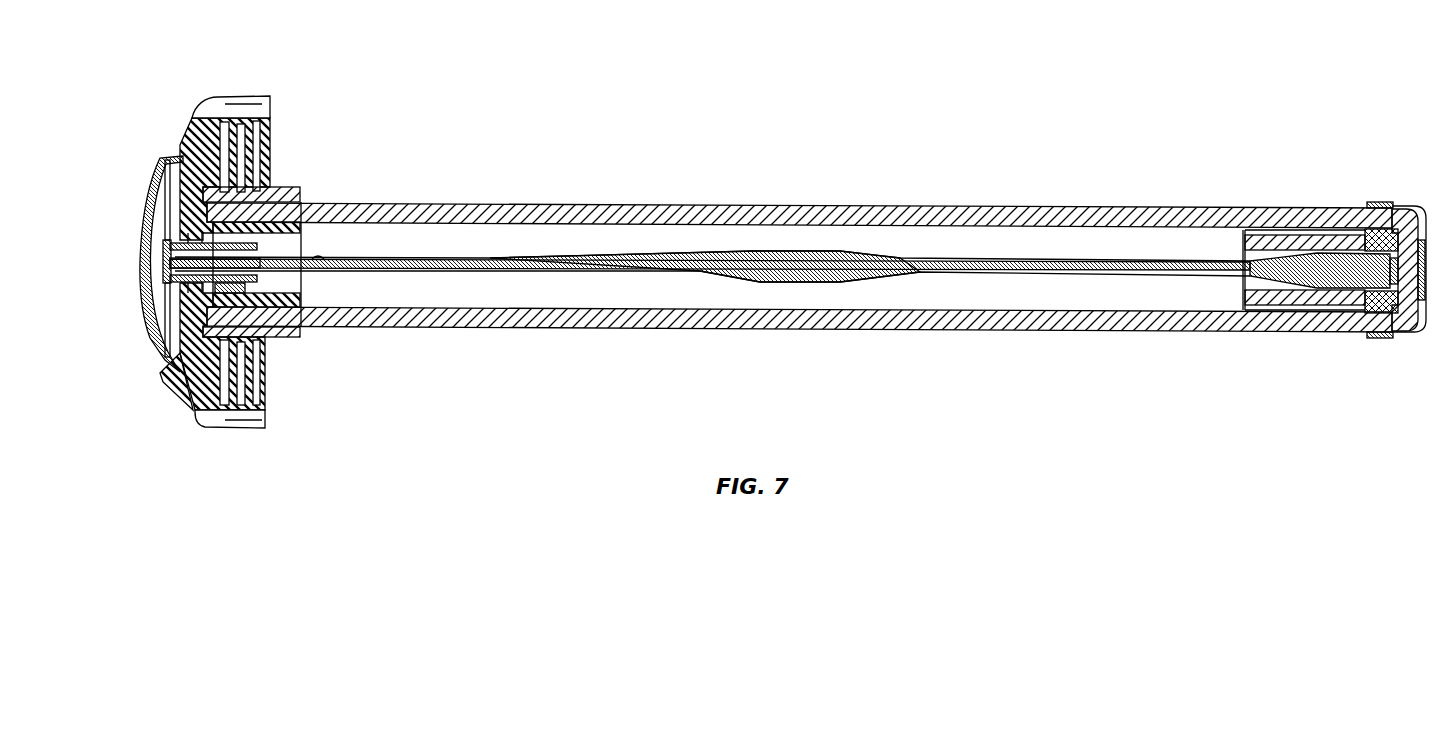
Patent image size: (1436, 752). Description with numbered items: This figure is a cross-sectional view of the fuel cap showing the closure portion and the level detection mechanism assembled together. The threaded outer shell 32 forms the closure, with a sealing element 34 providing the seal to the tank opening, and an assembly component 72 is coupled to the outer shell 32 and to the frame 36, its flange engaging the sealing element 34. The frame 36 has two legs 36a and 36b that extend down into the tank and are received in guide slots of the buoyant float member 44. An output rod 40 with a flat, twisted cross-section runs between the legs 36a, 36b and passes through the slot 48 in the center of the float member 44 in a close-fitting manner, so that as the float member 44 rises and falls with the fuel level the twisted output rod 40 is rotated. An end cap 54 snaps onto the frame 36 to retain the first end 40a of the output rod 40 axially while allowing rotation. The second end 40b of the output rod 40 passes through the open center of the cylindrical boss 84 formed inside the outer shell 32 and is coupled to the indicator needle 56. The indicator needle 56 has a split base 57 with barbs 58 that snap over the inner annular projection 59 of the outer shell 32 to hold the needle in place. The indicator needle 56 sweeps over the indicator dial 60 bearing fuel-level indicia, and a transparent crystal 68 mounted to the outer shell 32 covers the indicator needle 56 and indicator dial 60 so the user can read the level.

The outer shell 32 is at (270, 403).
The sealing element 34 is at (193, 133).
The frame 36 is at (1412, 322).
The frame leg 36a is at (572, 325).
The frame leg 36b is at (618, 205).
The output rod 40 is at (795, 262).
The first end 40a is at (1347, 270).
The second end 40b is at (183, 235).
The float member 44 is at (1263, 308).
The slot 48 is at (1367, 245).
The end cap 54 is at (1407, 208).
The indicator needle 56 is at (163, 242).
The base 57 is at (213, 217).
The barbs 58 is at (224, 290).
The inner annular lip or projection 59 is at (198, 370).
The indicator dial 60 is at (180, 287).
The lens or crystal 68 is at (143, 340).
The assembly component 72 is at (287, 188).
The boss 84 is at (277, 293).